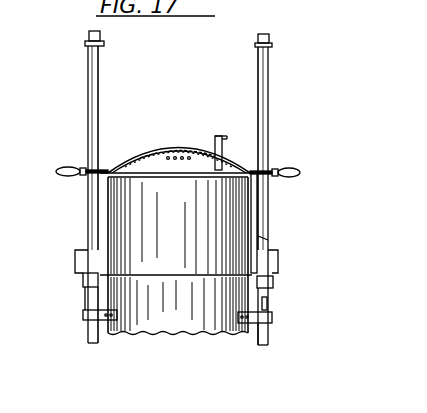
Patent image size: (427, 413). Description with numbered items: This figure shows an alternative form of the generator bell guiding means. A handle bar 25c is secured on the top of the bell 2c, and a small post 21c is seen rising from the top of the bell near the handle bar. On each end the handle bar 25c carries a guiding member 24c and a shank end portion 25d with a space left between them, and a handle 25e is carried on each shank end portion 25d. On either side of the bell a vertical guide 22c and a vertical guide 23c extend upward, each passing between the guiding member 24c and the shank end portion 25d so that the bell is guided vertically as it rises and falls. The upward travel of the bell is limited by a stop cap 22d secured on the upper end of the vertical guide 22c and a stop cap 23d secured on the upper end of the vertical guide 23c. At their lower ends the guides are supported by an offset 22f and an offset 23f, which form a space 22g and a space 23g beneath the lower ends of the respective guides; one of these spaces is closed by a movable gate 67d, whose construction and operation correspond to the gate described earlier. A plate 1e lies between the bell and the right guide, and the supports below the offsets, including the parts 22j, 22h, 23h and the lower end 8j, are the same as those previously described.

The bell 2c is at (249, 211).
The post on dome 21c is at (226, 134).
The handle bar 25c is at (190, 151).
The guiding member 24c is at (247, 171).
The vertical guide 22c is at (99, 97).
The stop cap 22d is at (105, 43).
The vertical guide 23c is at (257, 88).
The stop cap 23d is at (255, 44).
The shank end portion 25d is at (83, 166).
The handle 25e is at (62, 167).
The side plate 1e is at (250, 272).
The movable gate 67d is at (266, 238).
The offset 22f is at (77, 256).
The space 22g is at (86, 271).
The left rod lower portion 22j is at (84, 300).
The left clamp band 22h is at (84, 314).
The offset 23f is at (279, 263).
The space 23g is at (274, 278).
The right clamp band 23h is at (273, 318).
The right rod lower end 8j is at (270, 331).